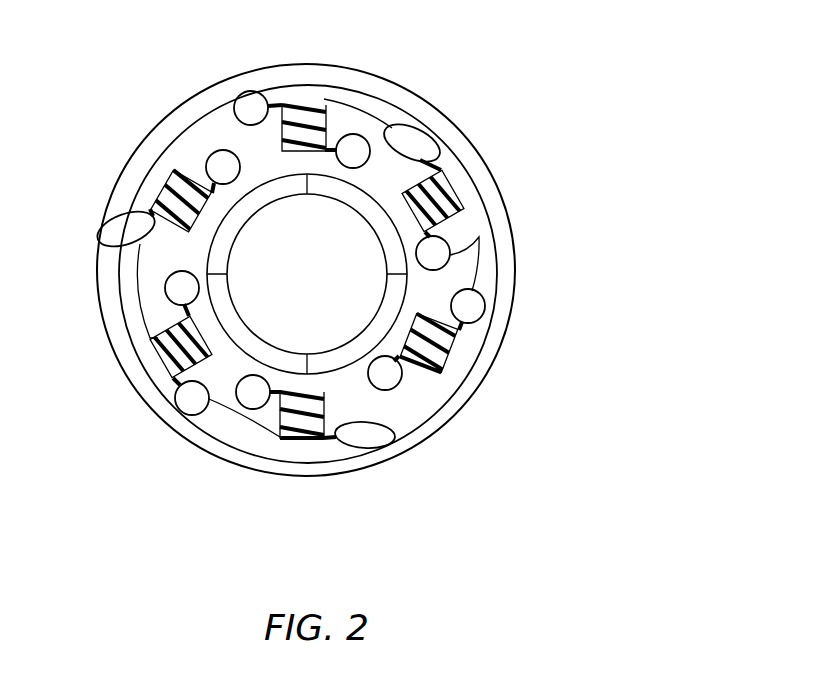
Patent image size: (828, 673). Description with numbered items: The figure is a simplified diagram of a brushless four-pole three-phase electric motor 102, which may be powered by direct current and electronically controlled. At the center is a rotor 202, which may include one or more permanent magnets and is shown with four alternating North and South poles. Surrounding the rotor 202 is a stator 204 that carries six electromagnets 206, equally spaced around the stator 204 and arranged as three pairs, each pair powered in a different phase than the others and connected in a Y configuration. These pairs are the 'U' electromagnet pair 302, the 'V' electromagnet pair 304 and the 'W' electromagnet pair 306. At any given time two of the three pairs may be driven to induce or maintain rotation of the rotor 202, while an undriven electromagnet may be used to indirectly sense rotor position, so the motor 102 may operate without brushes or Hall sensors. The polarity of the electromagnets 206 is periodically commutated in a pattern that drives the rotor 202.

The motor 102 is at (499, 99).
The rotor 202 is at (347, 357).
The stator 204 is at (480, 276).
The electromagnets 206 is at (324, 99).
The 'U' electromagnet pair 302 is at (250, 91).
The 'V' electromagnet pair 304 is at (450, 256).
The 'W' electromagnet pair 306 is at (211, 154).